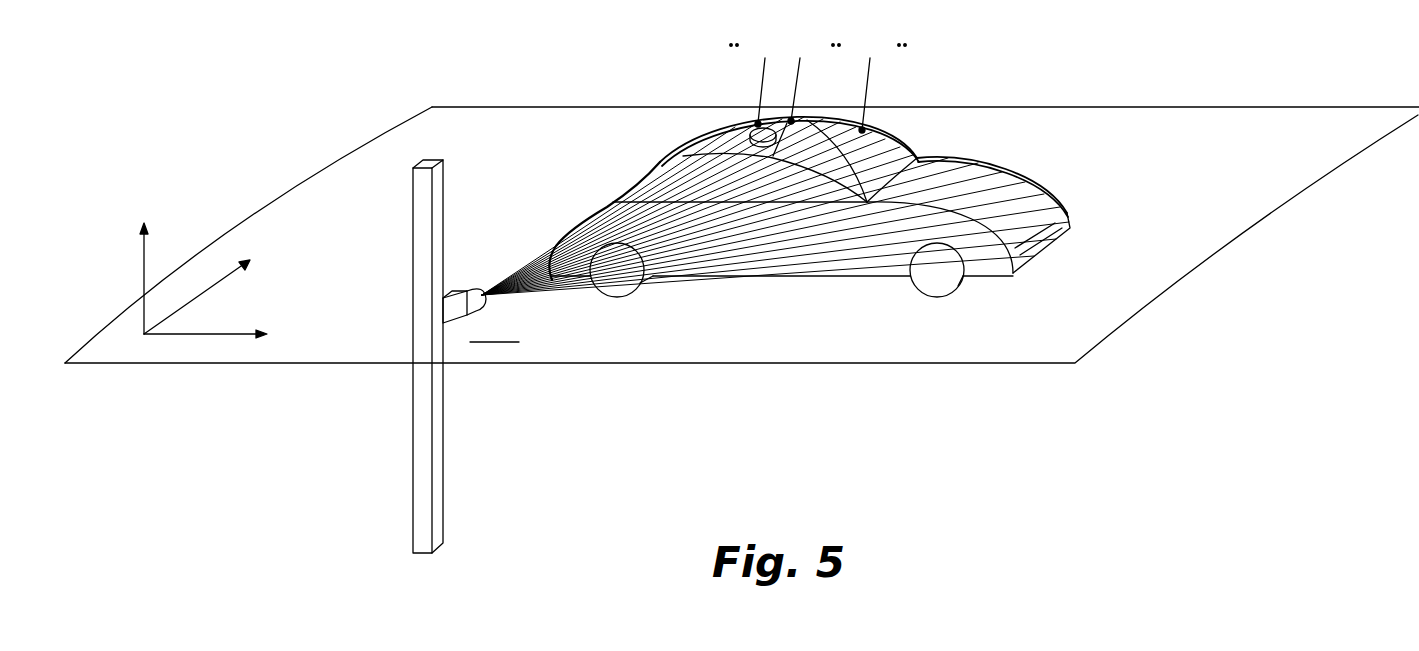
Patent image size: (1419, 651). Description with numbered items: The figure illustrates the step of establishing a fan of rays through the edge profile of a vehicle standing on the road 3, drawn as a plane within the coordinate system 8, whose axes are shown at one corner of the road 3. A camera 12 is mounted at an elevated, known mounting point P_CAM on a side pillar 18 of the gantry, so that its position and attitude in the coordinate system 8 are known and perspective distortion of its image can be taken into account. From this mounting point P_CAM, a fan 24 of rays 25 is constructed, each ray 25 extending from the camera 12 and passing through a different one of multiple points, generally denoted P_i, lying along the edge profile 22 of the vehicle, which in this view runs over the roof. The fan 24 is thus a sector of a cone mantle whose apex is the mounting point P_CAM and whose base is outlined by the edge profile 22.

The road 3 is at (1177, 270).
The coordinate system 8 is at (143, 280).
The camera 12 is at (465, 292).
The side pillar 18 is at (435, 520).
The edge profile 22 is at (910, 149).
The fan 24 is at (760, 206).
The rays 25 is at (578, 186).